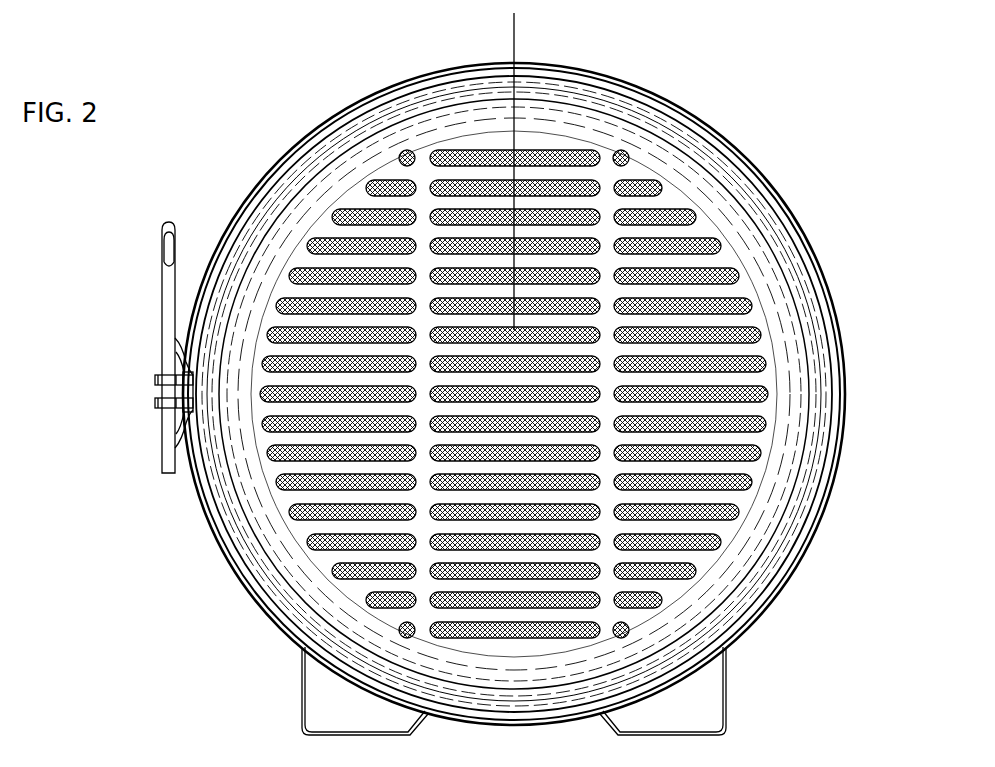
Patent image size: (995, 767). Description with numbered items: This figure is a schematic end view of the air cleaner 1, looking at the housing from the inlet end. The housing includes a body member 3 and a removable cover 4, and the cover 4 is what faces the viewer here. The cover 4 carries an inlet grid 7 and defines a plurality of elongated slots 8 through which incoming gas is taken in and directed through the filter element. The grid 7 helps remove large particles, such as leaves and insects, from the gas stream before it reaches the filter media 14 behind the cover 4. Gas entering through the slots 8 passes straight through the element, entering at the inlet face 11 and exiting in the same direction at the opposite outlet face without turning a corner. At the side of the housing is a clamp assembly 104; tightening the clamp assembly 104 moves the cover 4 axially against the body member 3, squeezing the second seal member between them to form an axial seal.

The air cleaner 1 is at (512, 30).
The body member 3 is at (811, 537).
The removable cover 4 is at (792, 473).
The inlet grid 7 is at (775, 409).
The elongated slots 8 is at (622, 188).
The inlet face 11 is at (720, 297).
The filter media 14 is at (345, 272).
The clamp assembly 104 is at (165, 299).